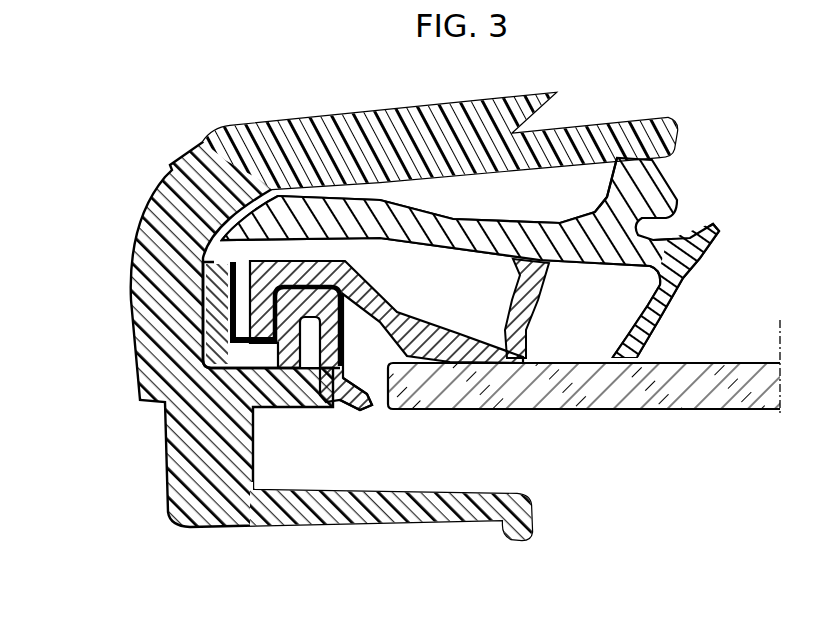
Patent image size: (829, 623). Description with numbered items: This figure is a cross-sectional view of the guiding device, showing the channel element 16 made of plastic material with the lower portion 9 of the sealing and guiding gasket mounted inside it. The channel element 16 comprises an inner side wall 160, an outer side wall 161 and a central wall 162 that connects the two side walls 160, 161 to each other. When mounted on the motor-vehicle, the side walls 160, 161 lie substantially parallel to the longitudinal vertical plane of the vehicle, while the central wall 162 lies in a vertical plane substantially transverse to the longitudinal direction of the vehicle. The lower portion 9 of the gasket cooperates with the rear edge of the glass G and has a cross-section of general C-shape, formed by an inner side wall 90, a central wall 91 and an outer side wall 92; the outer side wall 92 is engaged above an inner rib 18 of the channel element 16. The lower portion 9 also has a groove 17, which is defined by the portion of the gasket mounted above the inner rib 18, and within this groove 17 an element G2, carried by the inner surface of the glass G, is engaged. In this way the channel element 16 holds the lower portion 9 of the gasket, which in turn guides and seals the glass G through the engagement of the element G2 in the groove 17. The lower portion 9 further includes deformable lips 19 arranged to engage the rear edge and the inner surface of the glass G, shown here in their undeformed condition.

The channel element 16 is at (121, 212).
The inner side wall 160 is at (361, 140).
The outer side wall 161 is at (445, 512).
The central wall 162 is at (212, 337).
The groove 17 is at (243, 331).
The inner rib 18 is at (310, 347).
The seal lip 19 is at (658, 310).
The lower portion of the sealing and guiding gasket 9 is at (667, 178).
The inner side wall 90 is at (455, 218).
The central wall 91 is at (218, 280).
The outer side wall 92 is at (298, 297).
The glass G is at (684, 392).
The element carried by the inner surface of the glass G2 is at (303, 262).